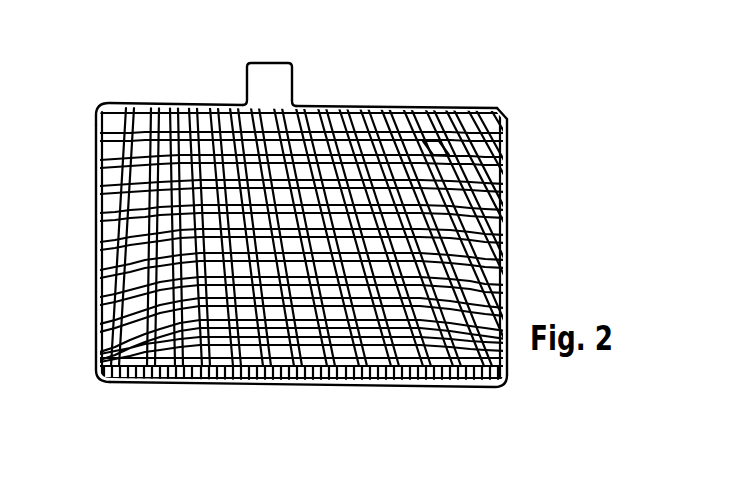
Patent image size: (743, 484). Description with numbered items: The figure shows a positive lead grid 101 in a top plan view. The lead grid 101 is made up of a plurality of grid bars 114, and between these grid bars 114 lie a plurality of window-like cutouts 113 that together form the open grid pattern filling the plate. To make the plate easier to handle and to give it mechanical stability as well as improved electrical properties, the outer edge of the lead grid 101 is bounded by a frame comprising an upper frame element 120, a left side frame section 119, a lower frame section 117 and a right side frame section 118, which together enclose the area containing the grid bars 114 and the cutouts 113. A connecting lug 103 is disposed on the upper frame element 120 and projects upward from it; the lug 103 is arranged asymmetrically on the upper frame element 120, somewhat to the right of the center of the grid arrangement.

The lead grid 101 is at (517, 110).
The connecting lug 103 is at (278, 80).
The window-like cutouts 113 is at (414, 228).
The grid bars 114 is at (413, 140).
The lower frame section 117 is at (287, 387).
The right side frame section 118 is at (508, 265).
The left side frame section 119 is at (95, 253).
The upper frame element 120 is at (181, 103).